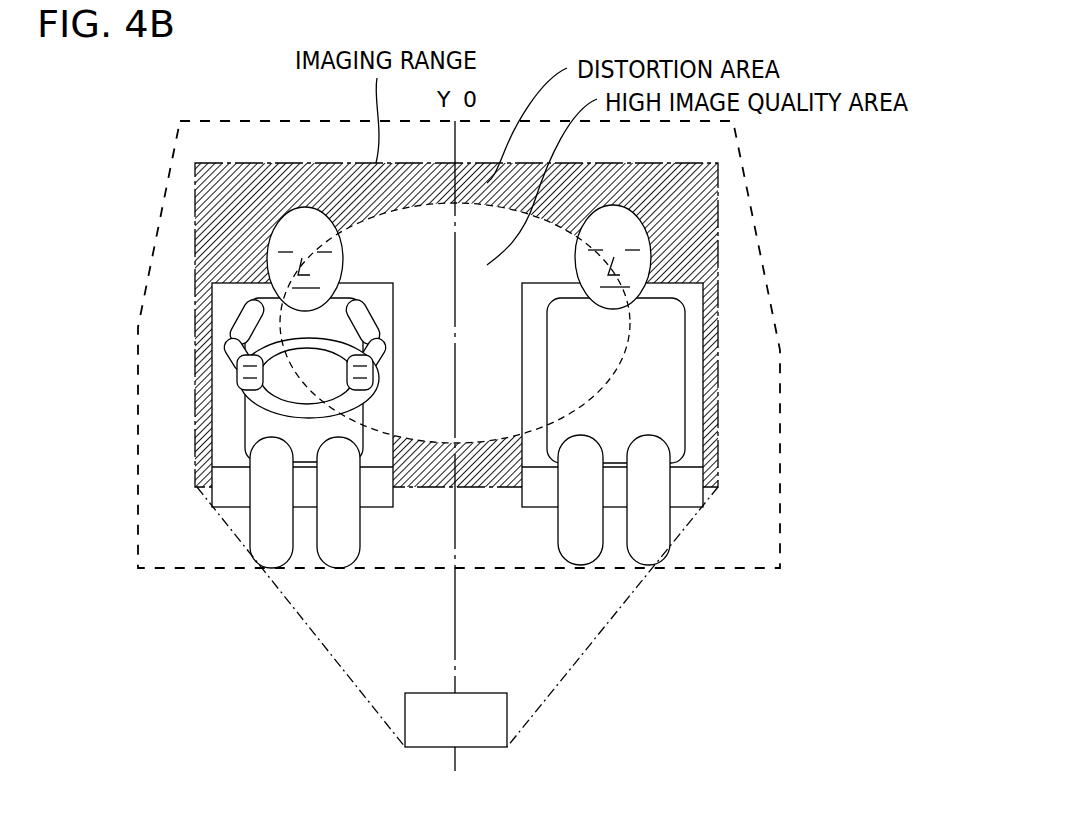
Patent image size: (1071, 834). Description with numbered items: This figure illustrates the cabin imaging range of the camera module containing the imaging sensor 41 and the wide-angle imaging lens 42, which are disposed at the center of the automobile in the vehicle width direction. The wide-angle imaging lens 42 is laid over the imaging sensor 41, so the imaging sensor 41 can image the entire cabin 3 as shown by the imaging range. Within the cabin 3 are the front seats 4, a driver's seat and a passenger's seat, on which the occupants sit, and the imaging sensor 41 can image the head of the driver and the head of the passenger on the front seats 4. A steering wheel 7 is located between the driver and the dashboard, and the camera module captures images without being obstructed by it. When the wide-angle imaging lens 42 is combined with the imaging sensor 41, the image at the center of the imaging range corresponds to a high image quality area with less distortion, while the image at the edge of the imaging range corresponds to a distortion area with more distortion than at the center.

The cabin 3 is at (715, 150).
The front seats 4 is at (212, 307).
The steering wheel 7 is at (257, 402).
The imaging sensor 41 is at (528, 720).
The wide-angle imaging lens 42 is at (493, 722).